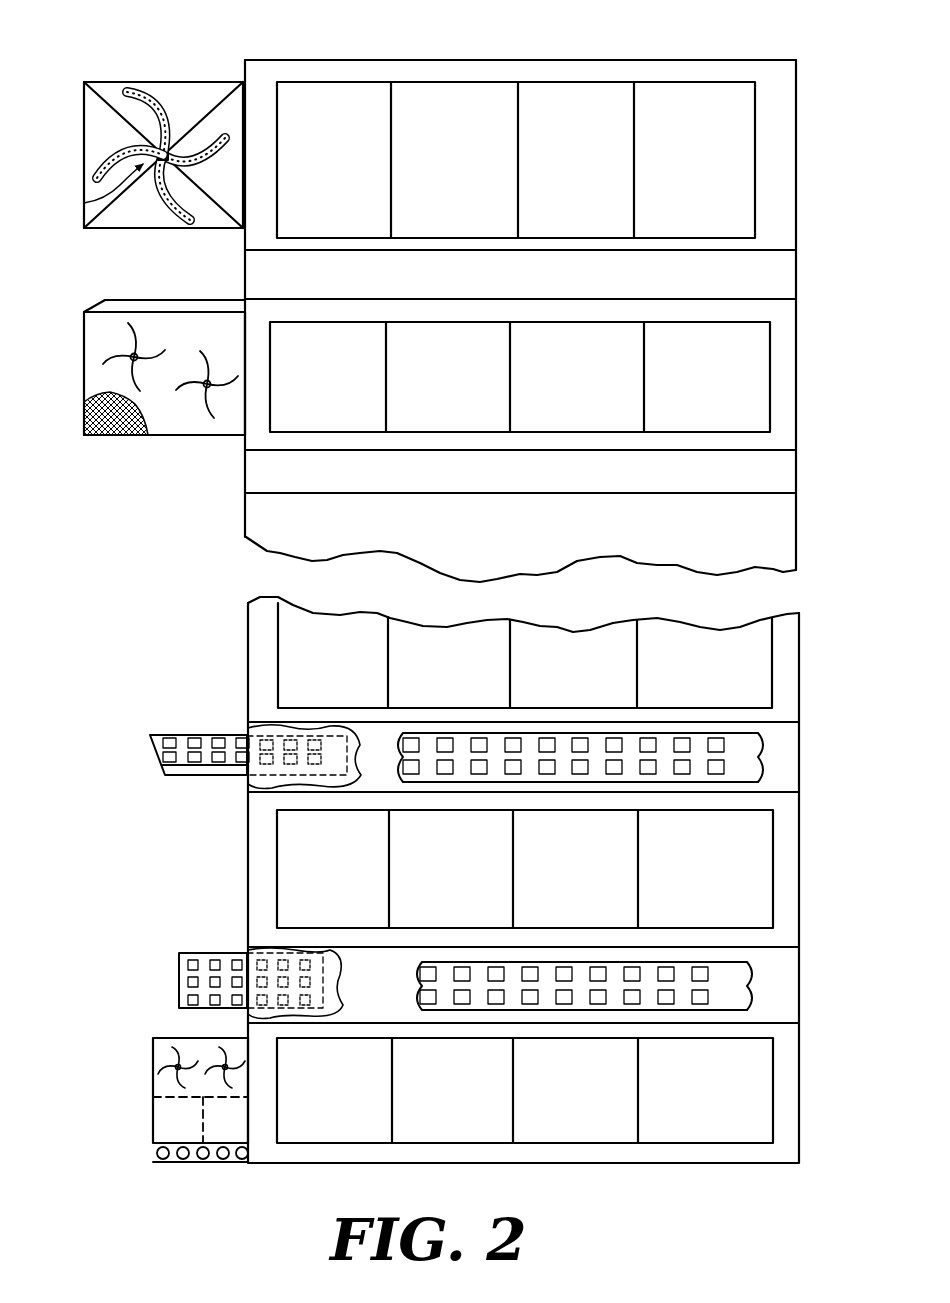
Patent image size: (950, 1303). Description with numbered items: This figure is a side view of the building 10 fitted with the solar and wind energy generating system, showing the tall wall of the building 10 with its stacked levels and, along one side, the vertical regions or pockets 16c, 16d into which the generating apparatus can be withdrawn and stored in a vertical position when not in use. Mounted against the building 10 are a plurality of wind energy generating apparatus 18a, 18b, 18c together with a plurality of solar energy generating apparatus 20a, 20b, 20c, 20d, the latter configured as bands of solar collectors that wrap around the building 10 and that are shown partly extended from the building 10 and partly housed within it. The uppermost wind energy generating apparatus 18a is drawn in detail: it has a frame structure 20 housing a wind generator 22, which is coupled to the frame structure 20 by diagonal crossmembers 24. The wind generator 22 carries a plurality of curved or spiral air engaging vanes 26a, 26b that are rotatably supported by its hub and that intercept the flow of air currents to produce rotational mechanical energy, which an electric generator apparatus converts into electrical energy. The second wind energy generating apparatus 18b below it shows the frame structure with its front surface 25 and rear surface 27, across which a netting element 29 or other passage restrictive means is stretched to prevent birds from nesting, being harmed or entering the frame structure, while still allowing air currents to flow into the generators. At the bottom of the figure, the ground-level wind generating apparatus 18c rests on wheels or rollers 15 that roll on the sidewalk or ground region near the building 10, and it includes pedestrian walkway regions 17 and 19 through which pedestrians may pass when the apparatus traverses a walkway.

The building 10 is at (371, 52).
The wheels or rollers 15 is at (150, 1153).
The vertical region or pocket 16c is at (245, 61).
The vertical region or pocket 16d is at (247, 1024).
The pedestrian walkway region 17 is at (230, 1117).
The wind energy generating apparatus 18a is at (83, 120).
The wind energy generating apparatus 18b is at (84, 333).
The wind generating apparatus 18c is at (152, 1065).
The pedestrian walkway region 19 is at (183, 1118).
The frame structure 20 is at (108, 81).
The solar energy generating apparatus 20a is at (169, 734).
The solar energy generating apparatus 20b is at (222, 952).
The solar energy generating apparatus 20c is at (767, 758).
The solar energy generating apparatus 20d is at (747, 994).
The wind generator 22 is at (84, 203).
The crossmembers 24 is at (218, 206).
The front surface 25 is at (141, 300).
The air engaging vane 26a is at (100, 165).
The air engaging vane 26b is at (157, 97).
The rear surface 27 is at (168, 426).
The netting element 29 is at (85, 421).